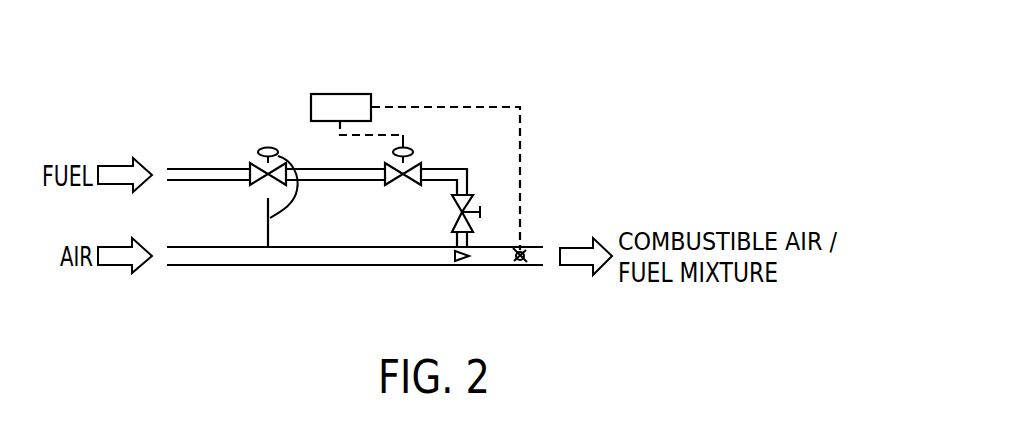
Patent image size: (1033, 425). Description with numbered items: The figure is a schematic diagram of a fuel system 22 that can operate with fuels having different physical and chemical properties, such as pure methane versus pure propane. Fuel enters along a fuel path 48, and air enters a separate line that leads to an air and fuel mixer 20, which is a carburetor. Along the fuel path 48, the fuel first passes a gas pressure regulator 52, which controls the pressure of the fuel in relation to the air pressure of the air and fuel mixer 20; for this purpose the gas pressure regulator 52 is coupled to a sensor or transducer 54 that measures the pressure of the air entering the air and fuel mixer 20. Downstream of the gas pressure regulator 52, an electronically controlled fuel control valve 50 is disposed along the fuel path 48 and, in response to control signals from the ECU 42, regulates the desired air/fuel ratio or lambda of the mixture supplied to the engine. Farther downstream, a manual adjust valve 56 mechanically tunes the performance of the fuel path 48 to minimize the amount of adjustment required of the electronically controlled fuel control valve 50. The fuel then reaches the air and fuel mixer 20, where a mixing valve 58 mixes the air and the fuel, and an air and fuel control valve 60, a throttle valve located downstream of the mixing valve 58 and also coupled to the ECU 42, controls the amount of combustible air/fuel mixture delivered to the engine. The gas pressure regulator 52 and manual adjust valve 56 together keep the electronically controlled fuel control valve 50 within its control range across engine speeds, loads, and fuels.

The air and fuel mixer 20 is at (385, 295).
The fuel system 22 is at (241, 86).
The ECU 42 is at (343, 93).
The fuel path 48 is at (336, 182).
The electronically controlled fuel control valve 50 is at (405, 186).
The gas pressure regulator 52 is at (265, 171).
The sensor or transducer 54 is at (268, 233).
The manual adjust valve 56 is at (469, 203).
The mixing valve 58 is at (463, 263).
The air and fuel control valve 60 is at (513, 266).